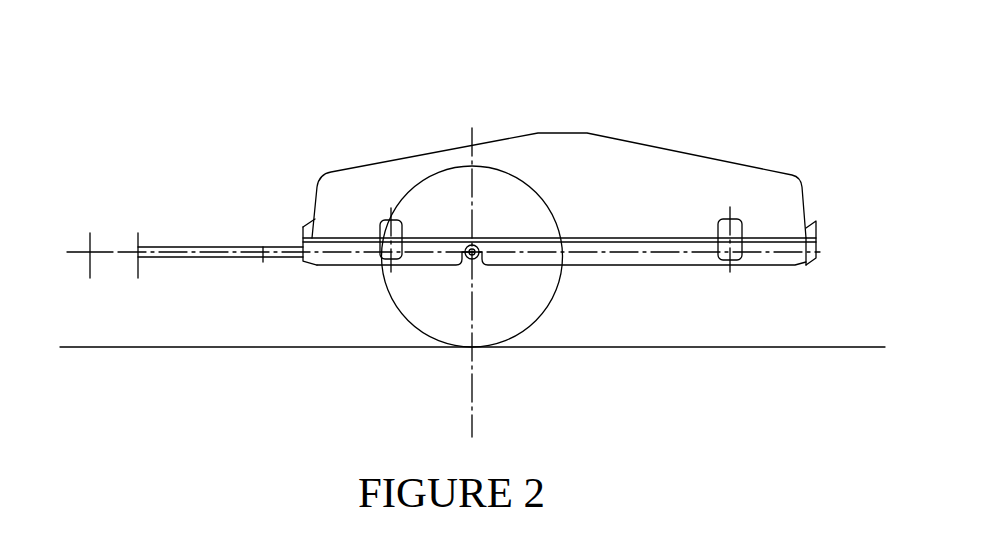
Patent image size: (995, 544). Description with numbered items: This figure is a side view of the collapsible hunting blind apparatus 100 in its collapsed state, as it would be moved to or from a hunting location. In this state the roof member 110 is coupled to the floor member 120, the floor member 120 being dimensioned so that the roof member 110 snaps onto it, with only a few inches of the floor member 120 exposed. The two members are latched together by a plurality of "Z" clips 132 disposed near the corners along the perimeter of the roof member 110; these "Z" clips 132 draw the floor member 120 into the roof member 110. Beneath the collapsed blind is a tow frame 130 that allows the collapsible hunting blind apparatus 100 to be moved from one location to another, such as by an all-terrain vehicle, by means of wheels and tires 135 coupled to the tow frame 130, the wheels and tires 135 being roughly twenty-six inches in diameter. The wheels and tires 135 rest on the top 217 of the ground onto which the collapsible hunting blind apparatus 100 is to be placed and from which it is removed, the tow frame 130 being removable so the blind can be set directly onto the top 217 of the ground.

The collapsible hunting blind apparatus 100 is at (192, 70).
The roof member 110 is at (405, 147).
The floor member 120 is at (676, 291).
The tow frame 130 is at (195, 240).
The "Z" clips 132 is at (391, 219).
The wheels and tires 135 is at (399, 290).
The top of a ground 217 is at (226, 348).